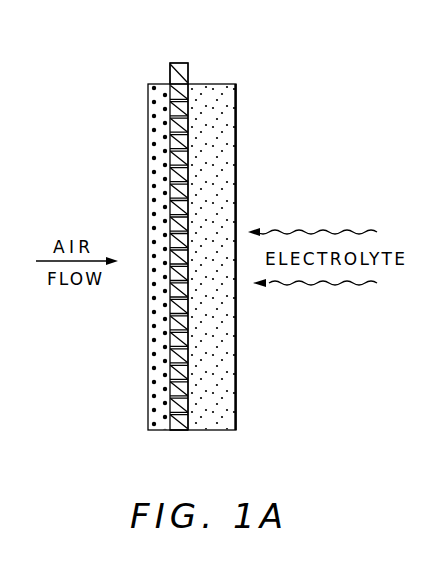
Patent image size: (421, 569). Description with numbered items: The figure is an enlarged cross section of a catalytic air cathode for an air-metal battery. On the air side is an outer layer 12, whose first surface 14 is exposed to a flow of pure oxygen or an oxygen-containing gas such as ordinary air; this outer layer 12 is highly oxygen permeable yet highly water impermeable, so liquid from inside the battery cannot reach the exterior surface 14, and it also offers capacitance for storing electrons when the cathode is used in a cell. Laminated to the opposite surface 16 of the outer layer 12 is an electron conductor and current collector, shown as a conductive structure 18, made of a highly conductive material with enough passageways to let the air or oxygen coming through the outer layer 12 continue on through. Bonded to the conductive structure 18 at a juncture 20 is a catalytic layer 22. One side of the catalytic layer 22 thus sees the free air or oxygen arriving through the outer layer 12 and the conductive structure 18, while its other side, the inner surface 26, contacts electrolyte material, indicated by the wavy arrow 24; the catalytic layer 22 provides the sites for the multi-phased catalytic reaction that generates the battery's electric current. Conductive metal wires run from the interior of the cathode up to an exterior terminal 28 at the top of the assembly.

The outer layer 12 is at (155, 387).
The first surface 14 is at (149, 325).
The surface 16 is at (171, 178).
The conductive structure 18 is at (183, 431).
The juncture 20 is at (188, 119).
The catalytic layer 22 is at (237, 365).
The wavy arrow 24 is at (318, 284).
The inner surface 26 is at (237, 150).
The exterior terminal 28 is at (176, 63).